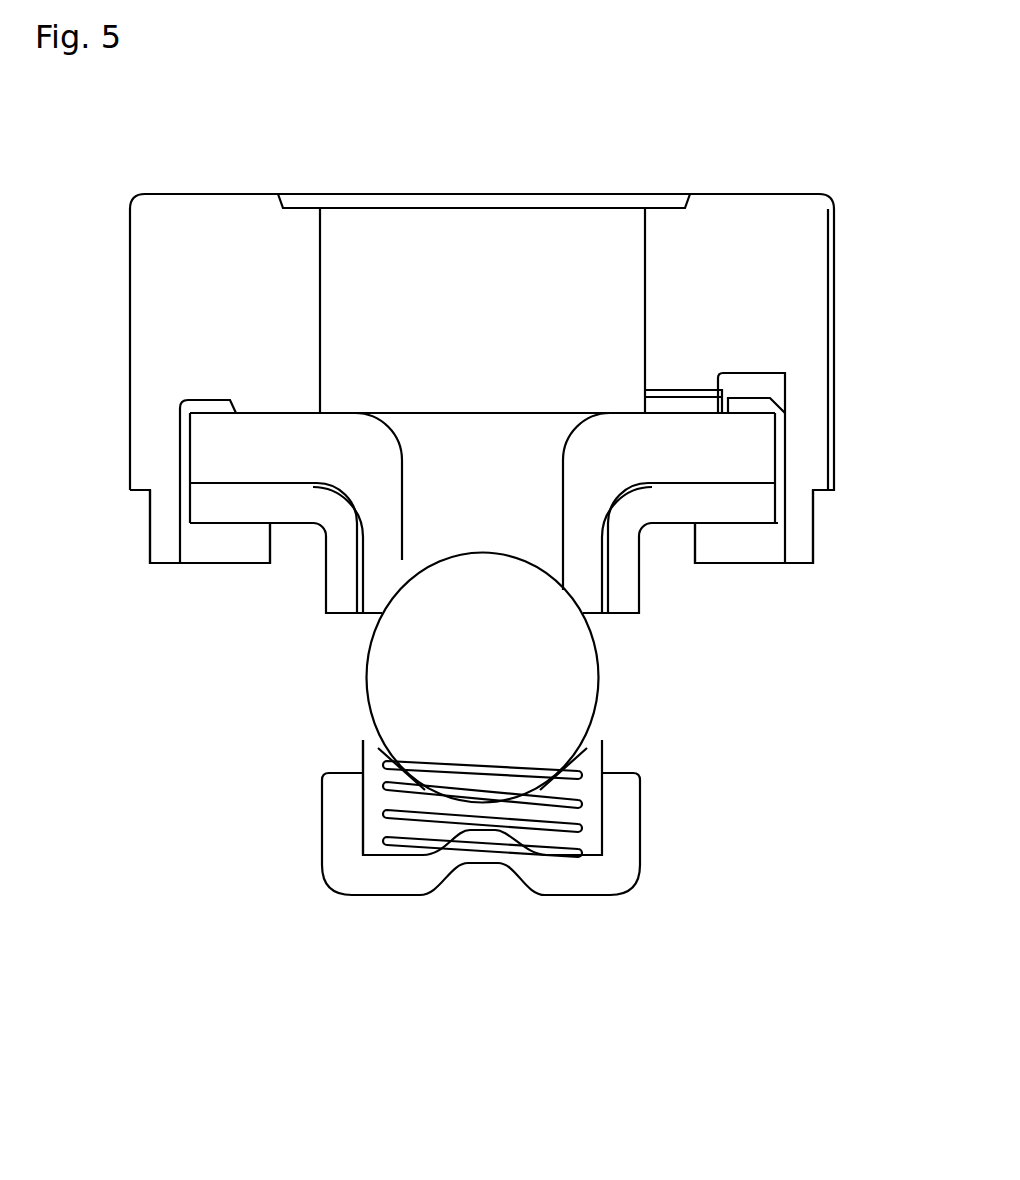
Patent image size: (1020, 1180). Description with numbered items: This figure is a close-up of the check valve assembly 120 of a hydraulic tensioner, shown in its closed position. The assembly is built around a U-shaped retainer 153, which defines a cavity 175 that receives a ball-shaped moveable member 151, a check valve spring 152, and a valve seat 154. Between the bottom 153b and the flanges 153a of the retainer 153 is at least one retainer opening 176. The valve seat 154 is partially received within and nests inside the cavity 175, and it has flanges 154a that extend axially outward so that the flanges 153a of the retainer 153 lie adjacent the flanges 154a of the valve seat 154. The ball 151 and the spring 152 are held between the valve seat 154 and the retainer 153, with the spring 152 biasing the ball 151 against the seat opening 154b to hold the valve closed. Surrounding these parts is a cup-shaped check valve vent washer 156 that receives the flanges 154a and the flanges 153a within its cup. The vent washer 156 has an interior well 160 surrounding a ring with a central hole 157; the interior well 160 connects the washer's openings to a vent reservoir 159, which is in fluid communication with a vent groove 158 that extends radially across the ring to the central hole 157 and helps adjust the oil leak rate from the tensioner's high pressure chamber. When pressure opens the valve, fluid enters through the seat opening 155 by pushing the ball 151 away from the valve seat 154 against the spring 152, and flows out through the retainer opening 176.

The check valve assembly 120 is at (118, 157).
The moveable member 151 is at (495, 693).
The check valve spring 152 is at (570, 805).
The retainer 153 is at (503, 863).
The flanges of the retainer 153a is at (270, 507).
The bottom of the retainer 153b is at (594, 848).
The valve seat 154 is at (458, 518).
The flanges of the valve seat 154a is at (235, 447).
The seat opening 154b is at (397, 560).
The seat opening 155 is at (567, 503).
The check valve vent washer 156 is at (712, 212).
The central hole 157 is at (318, 258).
The vent groove 158 is at (675, 392).
The vent reservoir 159 is at (740, 398).
The interior well 160 is at (207, 398).
The cavity 175 is at (358, 806).
The retainer opening 176 is at (597, 626).